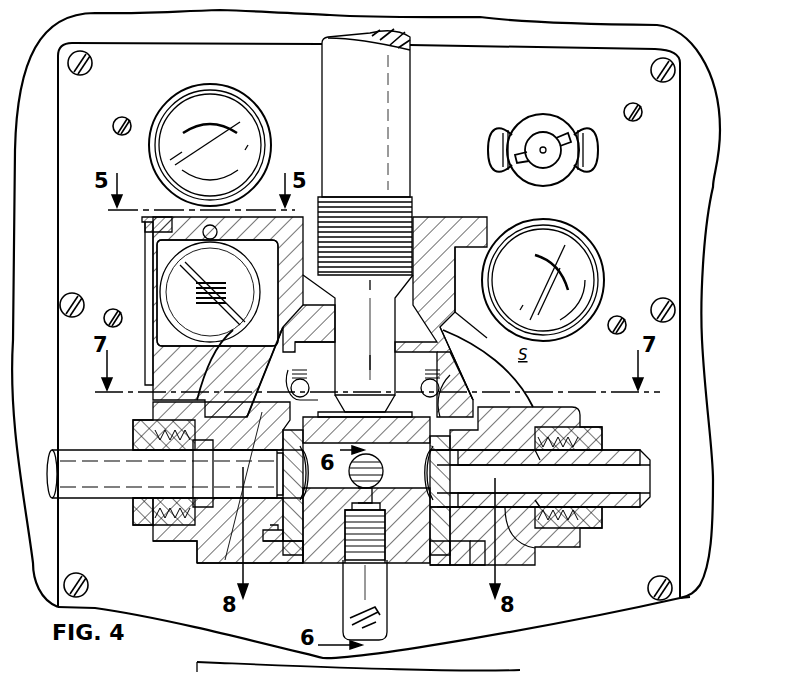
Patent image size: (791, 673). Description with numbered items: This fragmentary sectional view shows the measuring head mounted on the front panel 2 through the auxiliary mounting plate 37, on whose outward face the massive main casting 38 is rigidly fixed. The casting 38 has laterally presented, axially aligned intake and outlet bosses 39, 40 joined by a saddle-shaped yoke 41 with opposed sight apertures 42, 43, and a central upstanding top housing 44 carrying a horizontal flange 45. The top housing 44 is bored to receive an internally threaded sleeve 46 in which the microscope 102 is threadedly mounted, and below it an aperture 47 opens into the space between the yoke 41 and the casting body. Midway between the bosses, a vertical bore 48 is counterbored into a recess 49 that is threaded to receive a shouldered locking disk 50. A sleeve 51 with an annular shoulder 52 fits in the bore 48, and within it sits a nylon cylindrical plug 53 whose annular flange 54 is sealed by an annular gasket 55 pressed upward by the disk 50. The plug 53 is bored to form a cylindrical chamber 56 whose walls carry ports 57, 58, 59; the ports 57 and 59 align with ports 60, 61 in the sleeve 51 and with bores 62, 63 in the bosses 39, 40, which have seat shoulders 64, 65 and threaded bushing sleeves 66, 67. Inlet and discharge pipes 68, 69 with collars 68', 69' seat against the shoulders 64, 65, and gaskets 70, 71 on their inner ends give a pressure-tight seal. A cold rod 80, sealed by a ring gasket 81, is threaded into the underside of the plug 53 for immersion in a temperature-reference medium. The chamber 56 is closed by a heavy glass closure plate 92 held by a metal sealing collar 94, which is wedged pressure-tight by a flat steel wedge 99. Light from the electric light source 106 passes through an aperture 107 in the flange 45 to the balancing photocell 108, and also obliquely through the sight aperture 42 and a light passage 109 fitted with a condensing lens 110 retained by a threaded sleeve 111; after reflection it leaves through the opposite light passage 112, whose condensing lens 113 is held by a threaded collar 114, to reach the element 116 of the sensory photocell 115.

The front panel 2 is at (695, 570).
The auxiliary mounting plate 37 is at (592, 612).
The main casting 38 is at (193, 568).
The intake boss 39 is at (153, 405).
The outlet boss 40 is at (575, 415).
The saddle-shaped yoke 41 is at (467, 279).
The sight aperture 42 is at (217, 350).
The sight aperture 43 is at (520, 378).
The top housing 44 is at (448, 283).
The horizontal flange 45 is at (147, 255).
The internally threaded sleeve 46 is at (420, 225).
The aperture 47 is at (336, 332).
The vertical bore 48 is at (270, 555).
The recess 49 is at (290, 565).
The shouldered locking disk 50 is at (458, 567).
The sleeve 51 is at (445, 568).
The annular shoulder 52 is at (480, 567).
The cylindrical plug 53 is at (320, 567).
The annular flange 54 is at (287, 565).
The annular gasket 55 is at (300, 567).
The cylindrical chamber 56 is at (445, 395).
The port 57 is at (318, 478).
The port 58 is at (380, 463).
The port 59 is at (420, 478).
The port 60 is at (300, 470).
The port 61 is at (495, 476).
The bore 62 is at (215, 565).
The bore 63 is at (507, 555).
The seat shoulder 64 is at (185, 547).
The seat shoulder 65 is at (540, 548).
The bushing sleeve 66 is at (135, 527).
The bushing sleeve 67 is at (593, 530).
The inlet pipe 68 is at (165, 488).
The collar 68' is at (181, 473).
The discharge pipe 69 is at (548, 464).
The collar 69' is at (550, 478).
The gasket 70 is at (285, 432).
The gasket 71 is at (452, 435).
The cold rod 80 is at (388, 610).
The ring gasket 81 is at (387, 520).
The glass closure plate 92 is at (240, 372).
The sealing collar 94 is at (285, 335).
The flat steel wedge 99 is at (471, 321).
The microscope 102 is at (405, 90).
The electric light source 106 is at (165, 290).
The aperture 107 is at (244, 248).
The balancing photocell 108 is at (245, 108).
The light passage 109 is at (365, 394).
The condensing lens 110 is at (292, 356).
The threaded sleeve 111 is at (280, 392).
The light passage 112 is at (385, 385).
The condensing lens 113 is at (450, 365).
The threaded collar 114 is at (462, 363).
The sensory photocell 115 is at (583, 255).
The element 116 is at (540, 262).